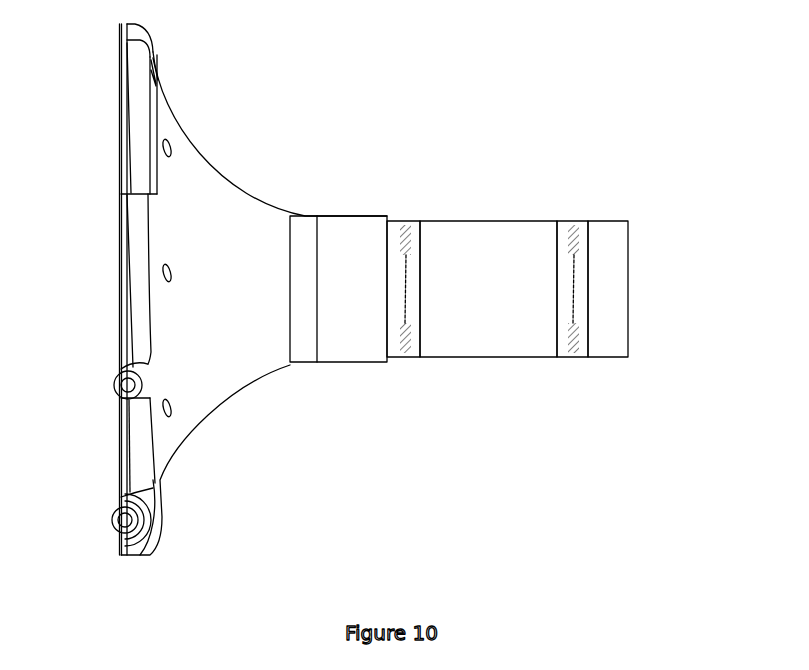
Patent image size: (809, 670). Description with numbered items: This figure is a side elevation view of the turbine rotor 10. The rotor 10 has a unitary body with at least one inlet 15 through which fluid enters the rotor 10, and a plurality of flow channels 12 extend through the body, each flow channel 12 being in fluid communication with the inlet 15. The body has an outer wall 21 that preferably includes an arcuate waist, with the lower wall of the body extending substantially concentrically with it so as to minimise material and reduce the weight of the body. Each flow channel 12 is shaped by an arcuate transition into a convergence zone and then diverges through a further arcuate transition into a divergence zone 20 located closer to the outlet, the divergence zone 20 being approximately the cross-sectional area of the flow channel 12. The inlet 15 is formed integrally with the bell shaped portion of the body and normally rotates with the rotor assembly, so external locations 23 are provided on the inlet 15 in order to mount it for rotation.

The turbine rotor 10 is at (632, 177).
The flow channels 12 is at (140, 112).
The inlet 15 is at (500, 220).
The divergence zone 20 is at (121, 516).
The outer wall 21 is at (247, 207).
The external locations 23 is at (412, 218).